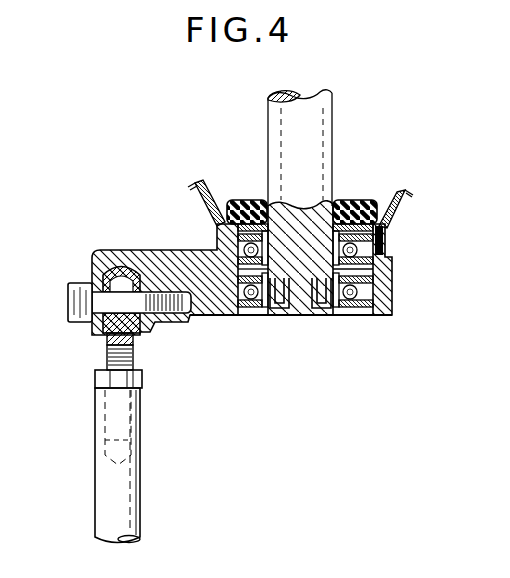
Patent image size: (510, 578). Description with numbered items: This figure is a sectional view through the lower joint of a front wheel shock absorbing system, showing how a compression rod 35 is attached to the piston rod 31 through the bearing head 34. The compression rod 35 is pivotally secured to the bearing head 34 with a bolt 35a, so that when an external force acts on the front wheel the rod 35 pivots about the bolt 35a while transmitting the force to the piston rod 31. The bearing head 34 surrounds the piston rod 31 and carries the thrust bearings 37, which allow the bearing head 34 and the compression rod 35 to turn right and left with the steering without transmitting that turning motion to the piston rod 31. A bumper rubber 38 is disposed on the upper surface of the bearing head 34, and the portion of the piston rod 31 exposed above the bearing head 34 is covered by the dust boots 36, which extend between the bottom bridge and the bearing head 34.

The piston rod 31 is at (320, 138).
The bearing head 34 is at (168, 251).
The compression rod 35 is at (130, 495).
The bolt 35a is at (85, 283).
The dust boots 36 is at (403, 200).
The thrust bearings 37 is at (380, 246).
The bumper rubber 38 is at (363, 207).